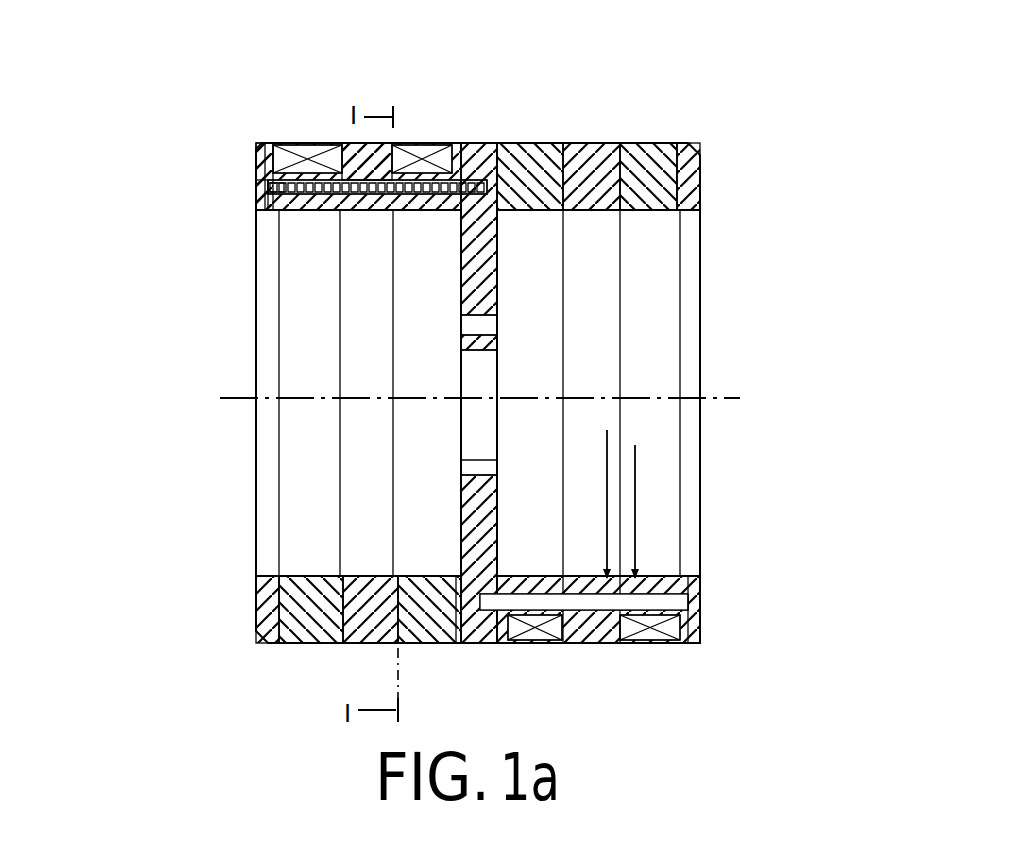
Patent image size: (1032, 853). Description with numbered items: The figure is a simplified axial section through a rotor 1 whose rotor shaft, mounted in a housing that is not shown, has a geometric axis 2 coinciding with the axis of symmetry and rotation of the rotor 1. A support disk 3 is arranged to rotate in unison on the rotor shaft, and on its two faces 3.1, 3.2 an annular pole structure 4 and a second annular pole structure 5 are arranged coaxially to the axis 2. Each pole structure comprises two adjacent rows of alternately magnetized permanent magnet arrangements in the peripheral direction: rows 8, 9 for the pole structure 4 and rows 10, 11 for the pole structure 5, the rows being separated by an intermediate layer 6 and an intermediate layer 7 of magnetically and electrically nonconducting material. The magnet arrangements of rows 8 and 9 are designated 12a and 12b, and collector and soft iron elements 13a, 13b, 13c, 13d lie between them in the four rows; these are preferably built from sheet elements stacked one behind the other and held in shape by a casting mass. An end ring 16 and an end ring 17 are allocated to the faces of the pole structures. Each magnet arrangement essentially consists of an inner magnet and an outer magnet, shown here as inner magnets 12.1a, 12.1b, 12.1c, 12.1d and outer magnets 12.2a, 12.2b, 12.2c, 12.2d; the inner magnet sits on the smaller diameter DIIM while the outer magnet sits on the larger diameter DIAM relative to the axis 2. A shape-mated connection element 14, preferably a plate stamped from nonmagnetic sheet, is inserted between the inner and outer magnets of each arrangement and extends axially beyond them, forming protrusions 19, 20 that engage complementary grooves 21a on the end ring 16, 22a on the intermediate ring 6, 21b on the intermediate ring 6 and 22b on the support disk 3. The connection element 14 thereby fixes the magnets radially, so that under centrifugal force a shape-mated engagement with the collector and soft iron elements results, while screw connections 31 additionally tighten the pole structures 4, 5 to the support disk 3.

The rotor 1 is at (667, 100).
The geometric axis 2 is at (512, 400).
The support disk 3 is at (490, 282).
The face of support disk 3.1 is at (455, 290).
The face of support disk 3.2 is at (493, 300).
The pole structure 4 is at (398, 110).
The pole structure 5 is at (692, 125).
The intermediate layer 6 is at (380, 378).
The intermediate layer 7 is at (592, 145).
The row of magnet arrangements 8 is at (302, 142).
The row of magnet arrangements 9 is at (428, 142).
The row of magnet arrangements 10 is at (542, 142).
The row of magnet arrangements 11 is at (636, 142).
The permanent magnet arrangement 12a is at (305, 212).
The permanent magnet arrangement 12b is at (447, 212).
The inner magnet 12.1a is at (283, 207).
The inner magnet 12.1b is at (403, 212).
The inner magnet 12.1c is at (537, 577).
The inner magnet 12.1d is at (690, 580).
The outer magnet 12.2a is at (262, 148).
The outer magnet 12.2b is at (446, 148).
The outer magnet 12.2c is at (548, 650).
The outer magnet 12.2d is at (663, 650).
The collector and soft iron element 13a is at (298, 592).
The collector and soft iron element 13b is at (410, 580).
The collector and soft iron element 13c is at (545, 190).
The collector and soft iron element 13d is at (680, 240).
The shape-mated connection element 14 is at (483, 148).
The end ring 16 is at (265, 346).
The end ring 17 is at (688, 284).
The protrusion 19 is at (258, 150).
The protrusion 20 is at (352, 146).
The groove 21a is at (293, 648).
The groove 21b is at (427, 648).
The groove 22a is at (323, 648).
The groove 22b is at (450, 648).
The screw connection 31 is at (265, 190).
The diameter of outer magnet DIAM is at (607, 438).
The diameter of inner magnet DIIM is at (635, 470).